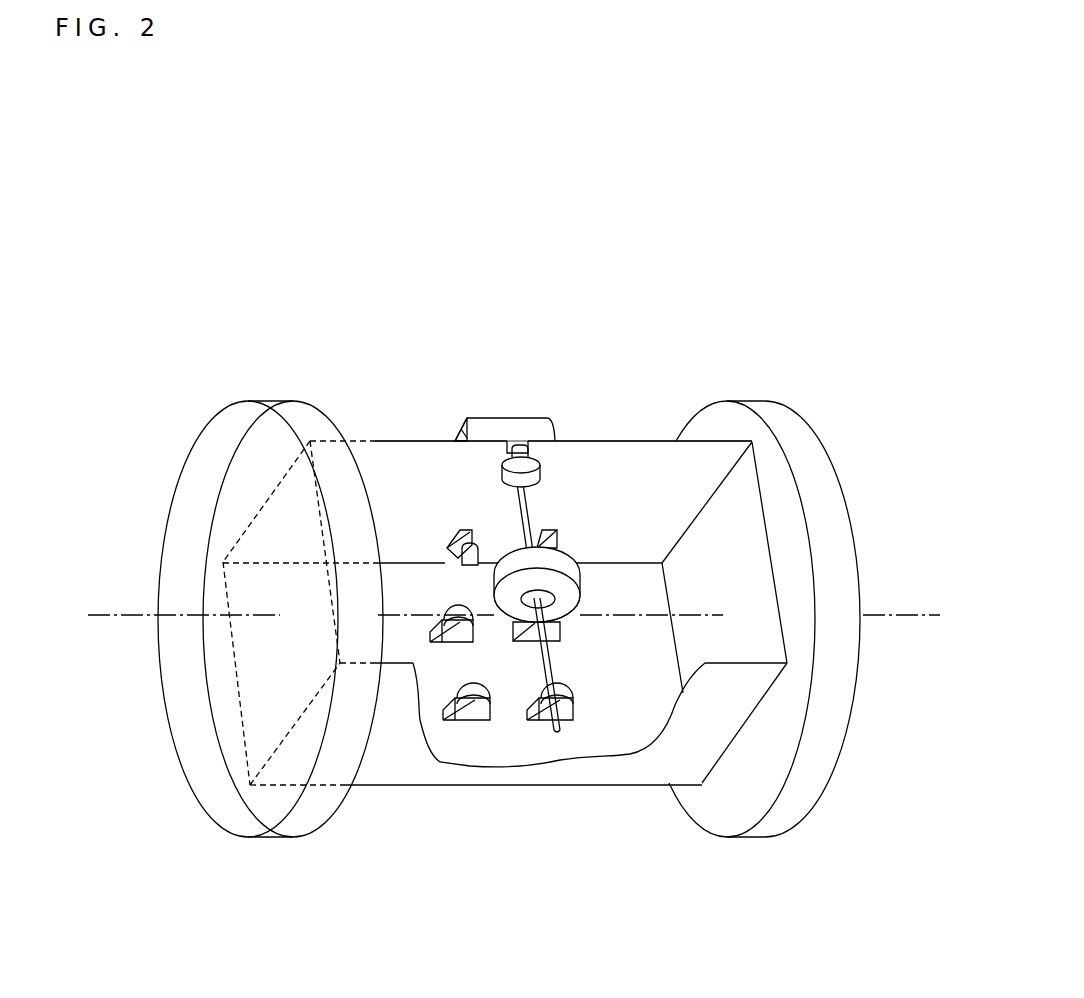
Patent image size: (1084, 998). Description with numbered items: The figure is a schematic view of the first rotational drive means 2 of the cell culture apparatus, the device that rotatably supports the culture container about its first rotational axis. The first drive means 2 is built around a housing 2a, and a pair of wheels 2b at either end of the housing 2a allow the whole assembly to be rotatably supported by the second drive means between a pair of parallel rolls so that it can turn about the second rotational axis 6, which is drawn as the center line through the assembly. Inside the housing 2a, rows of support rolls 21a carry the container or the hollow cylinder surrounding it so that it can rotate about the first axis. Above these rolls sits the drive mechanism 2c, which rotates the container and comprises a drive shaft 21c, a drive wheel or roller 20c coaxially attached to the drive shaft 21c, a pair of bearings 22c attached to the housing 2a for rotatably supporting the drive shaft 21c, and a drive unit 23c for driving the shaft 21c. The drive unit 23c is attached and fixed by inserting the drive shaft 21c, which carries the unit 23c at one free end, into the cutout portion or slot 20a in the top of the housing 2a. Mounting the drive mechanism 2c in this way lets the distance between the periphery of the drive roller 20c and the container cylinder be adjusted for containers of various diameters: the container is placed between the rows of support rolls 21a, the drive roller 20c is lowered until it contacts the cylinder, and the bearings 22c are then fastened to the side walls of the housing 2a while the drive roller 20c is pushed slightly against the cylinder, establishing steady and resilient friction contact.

The first rotational drive means 2 is at (340, 278).
The housing 2a is at (692, 742).
The wheels 2b is at (192, 798).
The drive mechanism 2c is at (432, 313).
The second rotational axis 6 is at (127, 612).
The cutout portion or slot 20a is at (522, 437).
The drive wheel or roller 20c is at (572, 546).
The support rolls 21a is at (445, 566).
The drive shaft 21c is at (563, 733).
The bearings 22c is at (498, 461).
The drive unit 23c is at (496, 414).